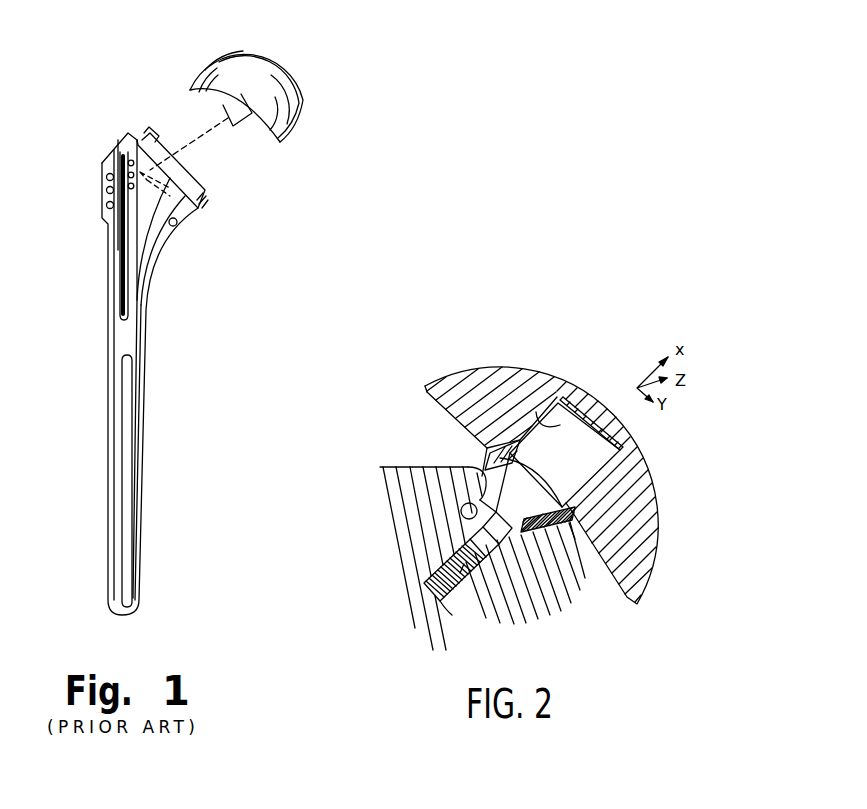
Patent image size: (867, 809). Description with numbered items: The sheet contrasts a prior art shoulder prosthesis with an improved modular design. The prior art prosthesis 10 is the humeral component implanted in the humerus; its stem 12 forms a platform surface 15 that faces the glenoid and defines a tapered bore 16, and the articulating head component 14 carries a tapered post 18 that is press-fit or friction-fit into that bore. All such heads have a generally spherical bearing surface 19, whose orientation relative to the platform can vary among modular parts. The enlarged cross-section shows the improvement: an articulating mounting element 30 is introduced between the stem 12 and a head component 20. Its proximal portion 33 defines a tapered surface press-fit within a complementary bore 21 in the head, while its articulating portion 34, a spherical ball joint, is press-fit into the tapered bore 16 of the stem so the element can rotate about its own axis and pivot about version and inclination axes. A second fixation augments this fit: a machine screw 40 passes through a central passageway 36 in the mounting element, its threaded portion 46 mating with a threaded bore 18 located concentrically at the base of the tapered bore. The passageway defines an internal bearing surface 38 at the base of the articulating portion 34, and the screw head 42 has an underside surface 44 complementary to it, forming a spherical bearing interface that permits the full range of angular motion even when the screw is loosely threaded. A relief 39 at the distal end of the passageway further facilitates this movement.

In FIG. 1, the prosthesis 10 is at (98, 118).
In FIG. 1, the stem 12 is at (123, 332).
In FIG. 2, the stem 12 is at (398, 468).
In FIG. 1, the head component 14 is at (257, 83).
In FIG. 1, the platform surface 15 is at (210, 193).
In FIG. 2, the platform surface 15 is at (477, 467).
In FIG. 1, the tapered bore 16 is at (183, 206).
In FIG. 2, the tapered bore 16 is at (483, 477).
In FIG. 1, the tapered post 18 is at (203, 132).
In FIG. 2, the tapered post 18 is at (423, 578).
In FIG. 1, the spherical bearing surface 19 is at (245, 53).
In FIG. 2, the head component 20 is at (512, 378).
In FIG. 2, the bore 21 is at (553, 398).
In FIG. 2, the mounting element 30 is at (556, 532).
In FIG. 2, the proximal portion 33 is at (620, 488).
In FIG. 2, the articulating portion 34 is at (470, 503).
In FIG. 2, the central passageway 36 is at (562, 410).
In FIG. 2, the internal bearing surface 38 is at (477, 490).
In FIG. 2, the relief 39 is at (460, 573).
In FIG. 2, the machine screw 40 is at (440, 553).
In FIG. 2, the head 42 is at (577, 512).
In FIG. 2, the underside surface 44 is at (517, 610).
In FIG. 2, the threaded portion 46 is at (438, 600).